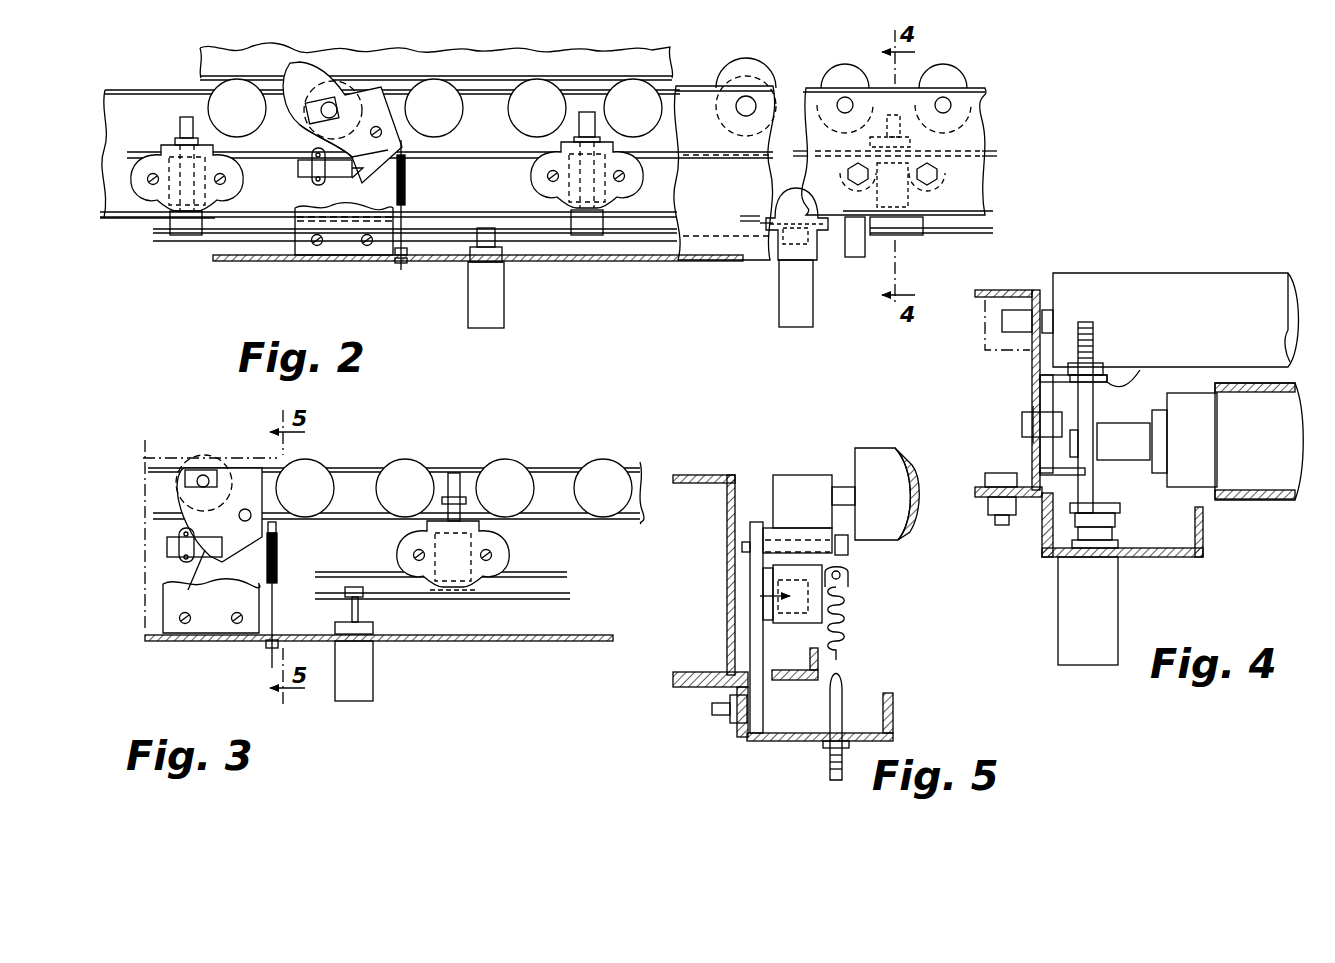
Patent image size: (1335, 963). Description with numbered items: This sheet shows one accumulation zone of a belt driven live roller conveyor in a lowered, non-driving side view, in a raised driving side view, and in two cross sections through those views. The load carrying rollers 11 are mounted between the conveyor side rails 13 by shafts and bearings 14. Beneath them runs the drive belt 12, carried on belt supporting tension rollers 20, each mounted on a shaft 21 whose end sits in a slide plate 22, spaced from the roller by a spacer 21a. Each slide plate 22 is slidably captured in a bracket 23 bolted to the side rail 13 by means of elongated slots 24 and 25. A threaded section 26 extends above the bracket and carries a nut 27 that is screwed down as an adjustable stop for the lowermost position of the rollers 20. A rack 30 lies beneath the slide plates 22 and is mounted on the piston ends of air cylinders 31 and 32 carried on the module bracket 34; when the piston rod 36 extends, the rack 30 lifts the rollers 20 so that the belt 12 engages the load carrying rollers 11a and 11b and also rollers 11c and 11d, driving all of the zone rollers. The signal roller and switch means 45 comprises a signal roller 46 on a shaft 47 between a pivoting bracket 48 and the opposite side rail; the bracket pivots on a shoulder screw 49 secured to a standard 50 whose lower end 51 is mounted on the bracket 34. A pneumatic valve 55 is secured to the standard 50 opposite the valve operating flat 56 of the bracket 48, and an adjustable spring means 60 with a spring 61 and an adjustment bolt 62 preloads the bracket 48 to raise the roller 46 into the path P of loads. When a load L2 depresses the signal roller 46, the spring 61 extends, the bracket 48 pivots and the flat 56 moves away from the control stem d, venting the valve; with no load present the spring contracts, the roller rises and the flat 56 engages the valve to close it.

In FIG. 2, the load carrying rollers 11 is at (735, 84).
In FIG. 4, the load carrying rollers 11 is at (1247, 288).
In FIG. 3, the load carrying roller 11a is at (403, 462).
In FIG. 3, the load carrying roller 11b is at (505, 462).
In FIG. 3, the load carrying roller 11c is at (315, 465).
In FIG. 3, the load carrying roller 11d is at (612, 462).
In FIG. 2, the drive belt 12 is at (993, 156).
In FIG. 3, the drive belt 12 is at (564, 520).
In FIG. 4, the drive belt 12 is at (1258, 395).
In FIG. 2, the conveyor side rails 13 is at (122, 97).
In FIG. 5, the conveyor side rails 13 is at (718, 474).
In FIG. 4, the conveyor side rails 13 is at (1030, 378).
In FIG. 4, the shafts and bearings 14 is at (975, 348).
In FIG. 2, the belt supporting tension rollers 20 is at (236, 196).
In FIG. 3, the belt supporting tension rollers 20 is at (508, 542).
In FIG. 4, the belt supporting tension rollers 20 is at (1278, 470).
In FIG. 4, the shaft 21 is at (1060, 445).
In FIG. 4, the spacer 21a is at (1130, 440).
In FIG. 2, the slide plate 22 is at (183, 236).
In FIG. 3, the slide plate 22 is at (512, 602).
In FIG. 4, the slide plate 22 is at (1082, 436).
In FIG. 2, the bracket 23 is at (150, 200).
In FIG. 3, the bracket 23 is at (438, 592).
In FIG. 4, the bracket 23 is at (1040, 402).
In FIG. 4, the elongated slot 24 is at (1140, 370).
In FIG. 4, the elongated slot 25 is at (1114, 504).
In FIG. 2, the threaded section 26 is at (588, 112).
In FIG. 3, the threaded section 26 is at (456, 472).
In FIG. 4, the threaded section 26 is at (1094, 330).
In FIG. 2, the nut 27 is at (598, 140).
In FIG. 3, the nut 27 is at (468, 501).
In FIG. 4, the nut 27 is at (1103, 366).
In FIG. 2, the rack 30 is at (160, 238).
In FIG. 3, the rack 30 is at (572, 598).
In FIG. 5, the rack 30 is at (792, 682).
In FIG. 4, the rack 30 is at (1114, 520).
In FIG. 2, the air cylinder 31 is at (485, 328).
In FIG. 3, the air cylinder 31 is at (370, 686).
In FIG. 2, the air cylinder 32 is at (786, 305).
In FIG. 4, the air cylinder 32 is at (1110, 632).
In FIG. 2, the module bracket 34 is at (683, 264).
In FIG. 3, the module bracket 34 is at (543, 646).
In FIG. 5, the module bracket 34 is at (895, 715).
In FIG. 4, the module bracket 34 is at (1196, 556).
In FIG. 3, the piston rod 36 is at (345, 619).
In FIG. 2, the signal roller and switch means 45 is at (345, 68).
In FIG. 3, the signal roller and switch means 45 is at (222, 434).
In FIG. 5, the signal roller and switch means 45 is at (829, 440).
In FIG. 2, the signal roller 46 is at (320, 88).
In FIG. 3, the signal roller 46 is at (198, 460).
In FIG. 5, the signal roller 46 is at (890, 464).
In FIG. 2, the shaft 47 is at (296, 86).
In FIG. 3, the shaft 47 is at (190, 480).
In FIG. 5, the shaft 47 is at (840, 486).
In FIG. 2, the pivoting bracket 48 is at (378, 87).
In FIG. 3, the pivoting bracket 48 is at (257, 466).
In FIG. 5, the pivoting bracket 48 is at (788, 490).
In FIG. 2, the shoulder screw 49 is at (382, 131).
In FIG. 3, the shoulder screw 49 is at (252, 512).
In FIG. 5, the shoulder screw 49 is at (818, 540).
In FIG. 2, the standard 50 is at (342, 246).
In FIG. 3, the standard 50 is at (206, 638).
In FIG. 5, the standard 50 is at (750, 630).
In FIG. 2, the lower end 51 is at (312, 258).
In FIG. 3, the lower end 51 is at (165, 642).
In FIG. 5, the lower end 51 is at (754, 742).
In FIG. 2, the pneumatic valve 55 is at (302, 180).
In FIG. 3, the pneumatic valve 55 is at (165, 562).
In FIG. 5, the pneumatic valve 55 is at (760, 596).
In FIG. 2, the valve operating flat 56 is at (408, 178).
In FIG. 3, the valve operating flat 56 is at (208, 554).
In FIG. 2, the adjustable spring means 60 is at (438, 207).
In FIG. 3, the adjustable spring means 60 is at (310, 554).
In FIG. 5, the adjustable spring means 60 is at (886, 645).
In FIG. 2, the spring 61 is at (406, 200).
In FIG. 3, the spring 61 is at (278, 568).
In FIG. 5, the spring 61 is at (845, 644).
In FIG. 2, the adjustment bolt 62 is at (403, 268).
In FIG. 3, the adjustment bolt 62 is at (270, 658).
In FIG. 5, the adjustment bolt 62 is at (845, 698).
In FIG. 2, the load L2 is at (470, 52).
In FIG. 3, the path of loads P is at (150, 452).
In FIG. 2, the control stem d is at (345, 184).
In FIG. 3, the control stem d is at (199, 600).
In FIG. 5, the control stem d is at (792, 624).